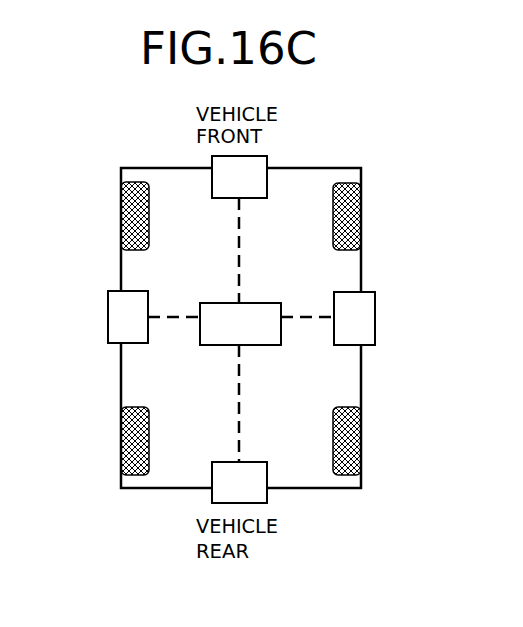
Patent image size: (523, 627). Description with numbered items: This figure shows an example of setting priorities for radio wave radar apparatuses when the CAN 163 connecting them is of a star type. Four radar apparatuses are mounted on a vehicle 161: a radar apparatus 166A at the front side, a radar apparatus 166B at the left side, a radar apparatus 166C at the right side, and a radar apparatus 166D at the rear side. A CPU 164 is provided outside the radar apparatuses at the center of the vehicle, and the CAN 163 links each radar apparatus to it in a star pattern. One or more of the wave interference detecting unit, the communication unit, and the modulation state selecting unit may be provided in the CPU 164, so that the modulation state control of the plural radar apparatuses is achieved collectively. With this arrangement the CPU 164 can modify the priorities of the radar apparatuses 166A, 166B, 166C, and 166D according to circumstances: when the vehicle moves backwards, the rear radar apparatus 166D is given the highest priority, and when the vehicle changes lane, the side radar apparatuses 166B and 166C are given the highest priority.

The vehicle 161 is at (310, 478).
The CAN 163 is at (238, 256).
The CPU 164 is at (207, 345).
The radar apparatus 166A is at (258, 198).
The radar apparatus 166B is at (108, 330).
The radar apparatus 166C is at (375, 330).
The radar apparatus 166D is at (268, 495).